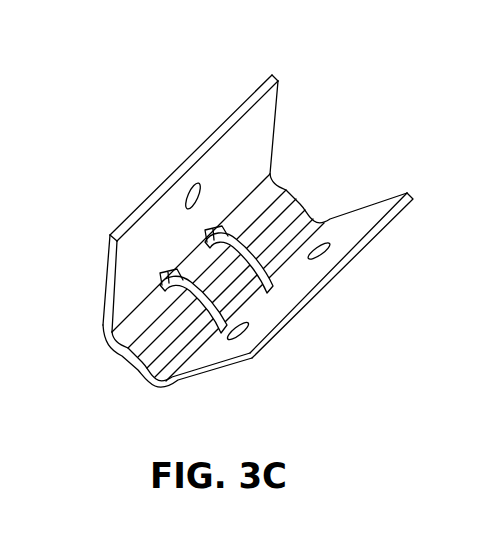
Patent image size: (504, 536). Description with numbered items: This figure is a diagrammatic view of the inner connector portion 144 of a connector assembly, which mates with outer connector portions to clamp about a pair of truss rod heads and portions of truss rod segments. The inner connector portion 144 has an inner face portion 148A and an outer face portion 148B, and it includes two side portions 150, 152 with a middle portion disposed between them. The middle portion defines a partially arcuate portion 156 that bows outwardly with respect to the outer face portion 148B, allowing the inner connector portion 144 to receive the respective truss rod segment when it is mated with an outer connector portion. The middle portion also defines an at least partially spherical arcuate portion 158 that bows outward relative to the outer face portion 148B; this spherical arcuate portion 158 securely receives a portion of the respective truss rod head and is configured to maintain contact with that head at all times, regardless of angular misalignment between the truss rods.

The inner connector portion 144 is at (165, 142).
The inner face portion 148A is at (103, 273).
The outer face portion 148B is at (266, 112).
The side portion 150 is at (262, 157).
The side portion 152 is at (382, 200).
The partially arcuate portion 156 is at (293, 198).
The at least partially spherical arcuate portion 158 is at (233, 236).